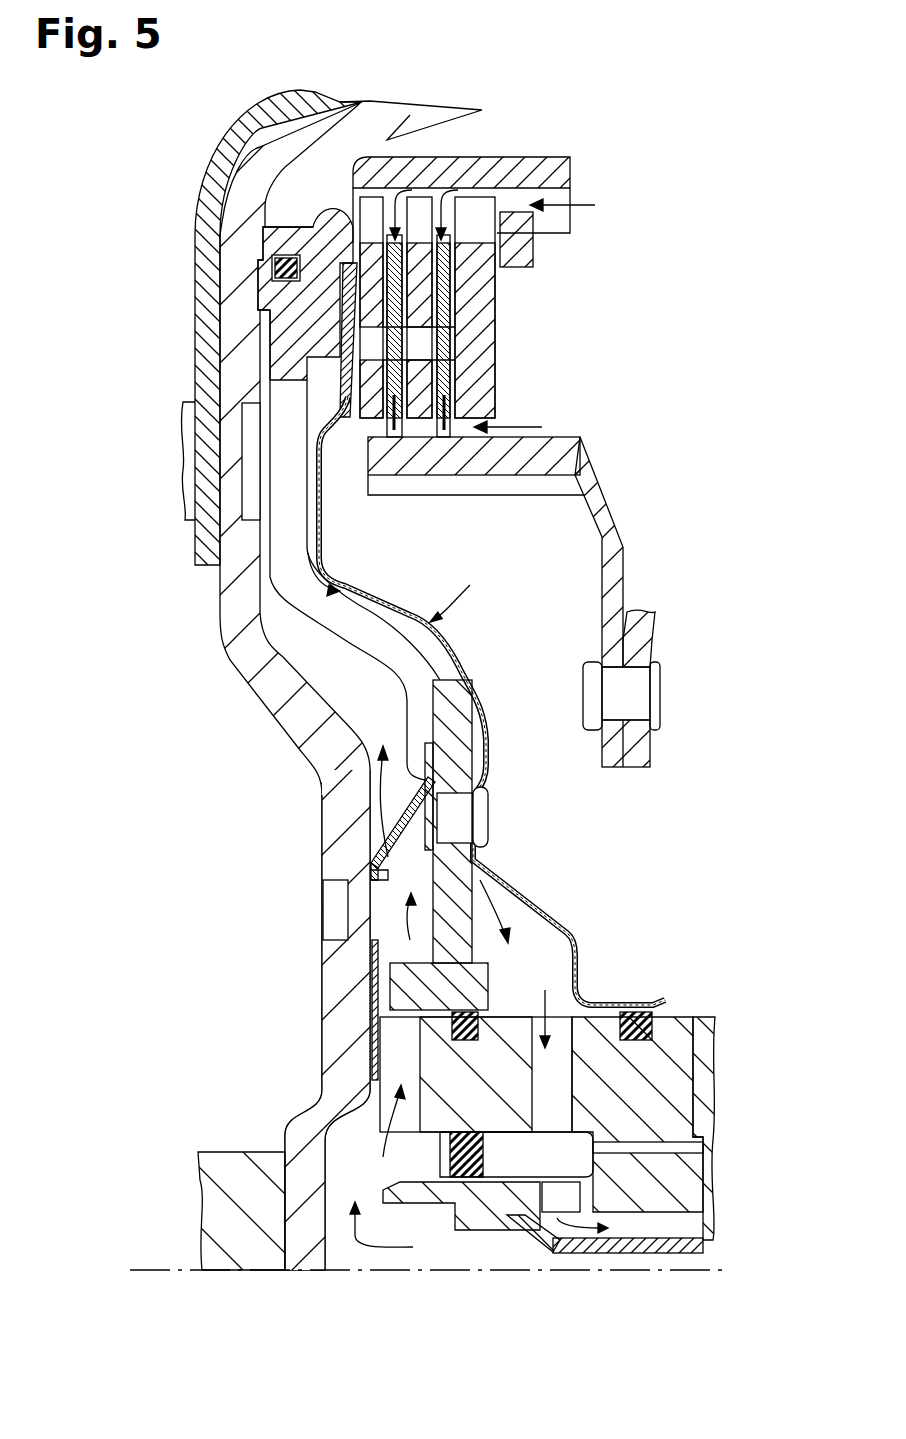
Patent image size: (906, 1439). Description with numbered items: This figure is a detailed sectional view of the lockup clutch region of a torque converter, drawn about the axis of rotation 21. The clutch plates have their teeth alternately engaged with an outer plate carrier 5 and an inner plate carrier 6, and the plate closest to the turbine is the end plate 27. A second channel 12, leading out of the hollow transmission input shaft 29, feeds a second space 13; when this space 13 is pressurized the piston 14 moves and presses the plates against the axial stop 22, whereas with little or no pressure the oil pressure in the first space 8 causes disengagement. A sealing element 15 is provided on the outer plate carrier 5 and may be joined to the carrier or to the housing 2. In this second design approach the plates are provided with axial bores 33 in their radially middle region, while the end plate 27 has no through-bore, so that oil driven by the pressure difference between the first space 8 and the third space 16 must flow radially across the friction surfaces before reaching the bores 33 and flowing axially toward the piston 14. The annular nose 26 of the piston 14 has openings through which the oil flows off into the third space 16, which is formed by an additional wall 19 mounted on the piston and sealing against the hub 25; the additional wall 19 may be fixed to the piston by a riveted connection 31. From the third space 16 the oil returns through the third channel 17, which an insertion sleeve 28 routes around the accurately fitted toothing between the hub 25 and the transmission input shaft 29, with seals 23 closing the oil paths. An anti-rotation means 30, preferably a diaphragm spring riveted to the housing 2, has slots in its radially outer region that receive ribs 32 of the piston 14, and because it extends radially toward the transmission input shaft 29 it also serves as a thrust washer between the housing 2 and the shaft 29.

The torque converter housing 2 is at (232, 607).
The outer plate carrier 5 is at (562, 178).
The inner plate carrier 6 is at (596, 482).
The first space 8 is at (537, 553).
The second channel 12 is at (410, 1238).
The second space 13 is at (352, 709).
The piston 14 is at (367, 627).
The sealing element 15 is at (340, 322).
The third space 16 is at (460, 665).
The third channel 17 is at (560, 1105).
The additional wall 19 is at (466, 588).
The axis of rotation 21 is at (303, 1250).
The axial stop 22 is at (528, 250).
The seal 23 is at (275, 268).
The hub 25 is at (468, 1091).
The nose 26 is at (336, 373).
The end plate 27 is at (485, 385).
The insertion sleeve 28 is at (700, 1250).
The transmission input shaft 29 is at (690, 1187).
The anti-rotation means of the piston 30 is at (375, 828).
The riveted connection 31 is at (480, 825).
The rib 32 is at (445, 728).
The bore 33 is at (445, 330).